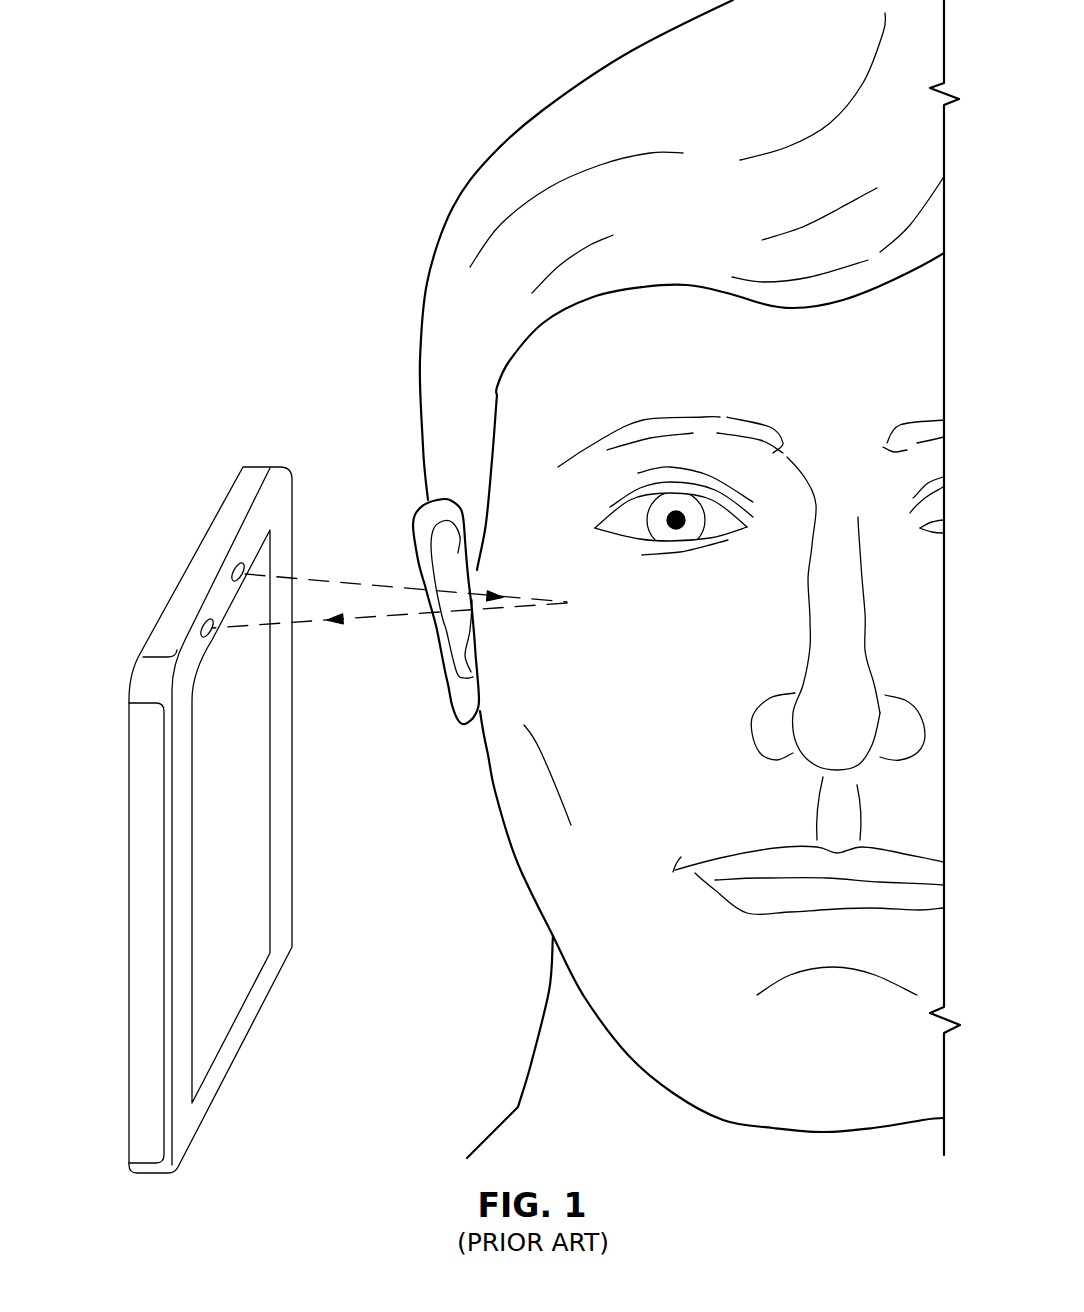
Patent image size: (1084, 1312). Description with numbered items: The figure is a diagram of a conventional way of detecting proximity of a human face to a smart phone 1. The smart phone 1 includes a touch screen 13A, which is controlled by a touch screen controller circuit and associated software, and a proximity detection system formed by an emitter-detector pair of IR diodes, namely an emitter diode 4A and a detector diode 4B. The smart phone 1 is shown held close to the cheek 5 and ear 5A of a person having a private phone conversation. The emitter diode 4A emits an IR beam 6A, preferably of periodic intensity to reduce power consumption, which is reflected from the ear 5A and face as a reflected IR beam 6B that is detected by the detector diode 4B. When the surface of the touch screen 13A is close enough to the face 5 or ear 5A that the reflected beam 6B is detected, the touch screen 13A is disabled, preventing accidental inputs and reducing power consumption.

The smart phone 1 is at (217, 783).
The emitter diode 4A is at (248, 560).
The detector diode 4B is at (128, 562).
The cheek 5 is at (686, 579).
The ear 5A is at (442, 508).
The IR beam 6A is at (377, 587).
The reflected IR beam 6B is at (402, 618).
The touch screen 13A is at (258, 850).